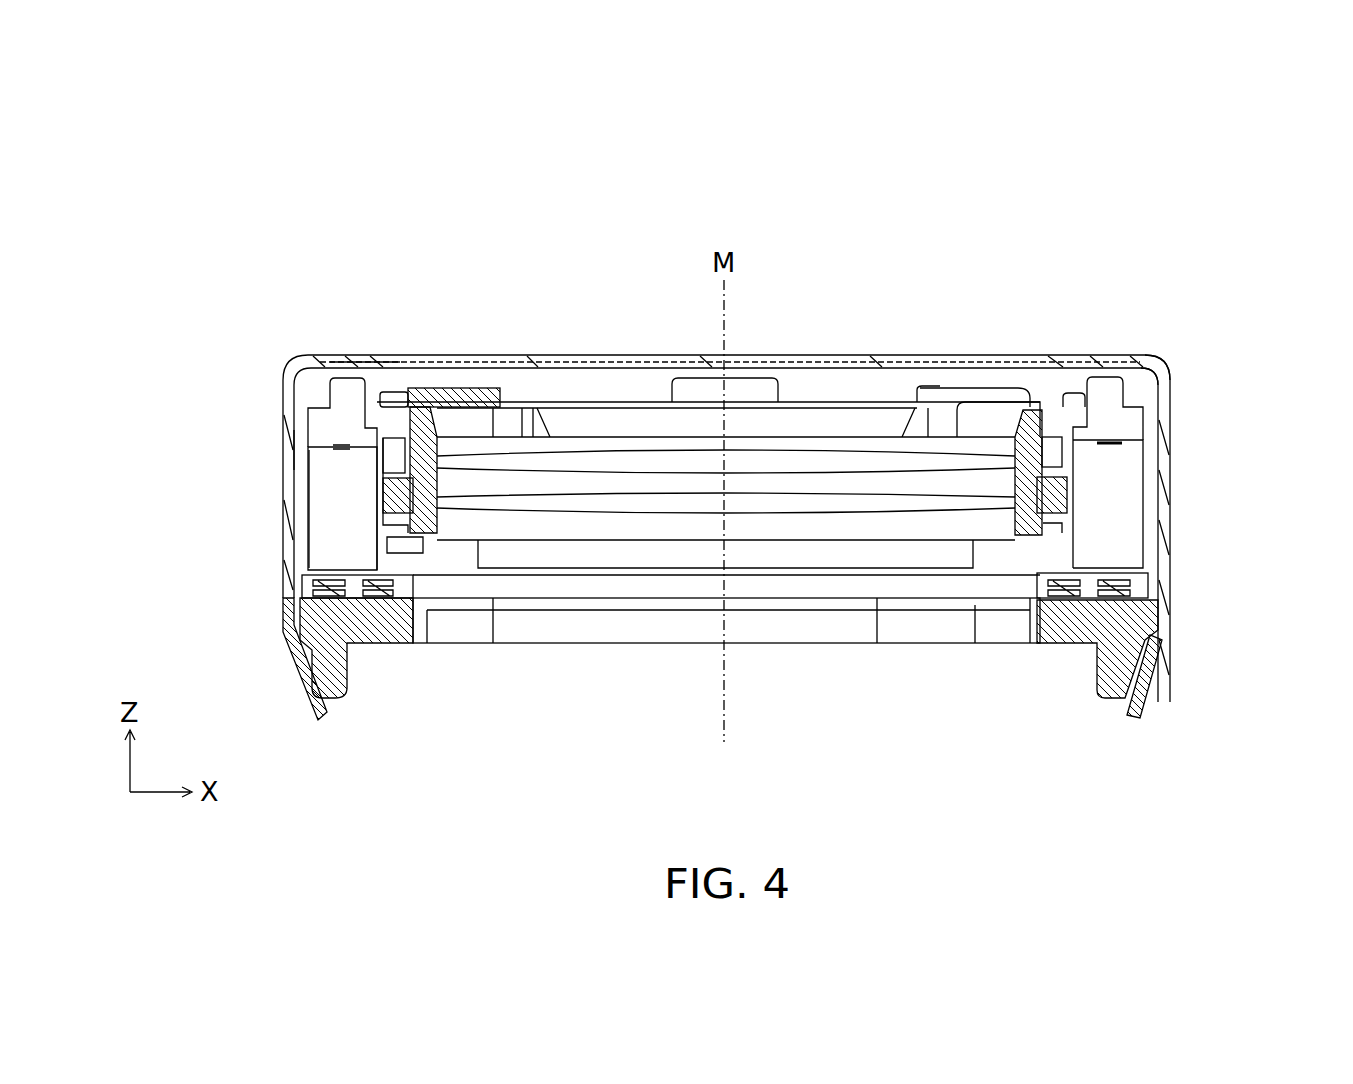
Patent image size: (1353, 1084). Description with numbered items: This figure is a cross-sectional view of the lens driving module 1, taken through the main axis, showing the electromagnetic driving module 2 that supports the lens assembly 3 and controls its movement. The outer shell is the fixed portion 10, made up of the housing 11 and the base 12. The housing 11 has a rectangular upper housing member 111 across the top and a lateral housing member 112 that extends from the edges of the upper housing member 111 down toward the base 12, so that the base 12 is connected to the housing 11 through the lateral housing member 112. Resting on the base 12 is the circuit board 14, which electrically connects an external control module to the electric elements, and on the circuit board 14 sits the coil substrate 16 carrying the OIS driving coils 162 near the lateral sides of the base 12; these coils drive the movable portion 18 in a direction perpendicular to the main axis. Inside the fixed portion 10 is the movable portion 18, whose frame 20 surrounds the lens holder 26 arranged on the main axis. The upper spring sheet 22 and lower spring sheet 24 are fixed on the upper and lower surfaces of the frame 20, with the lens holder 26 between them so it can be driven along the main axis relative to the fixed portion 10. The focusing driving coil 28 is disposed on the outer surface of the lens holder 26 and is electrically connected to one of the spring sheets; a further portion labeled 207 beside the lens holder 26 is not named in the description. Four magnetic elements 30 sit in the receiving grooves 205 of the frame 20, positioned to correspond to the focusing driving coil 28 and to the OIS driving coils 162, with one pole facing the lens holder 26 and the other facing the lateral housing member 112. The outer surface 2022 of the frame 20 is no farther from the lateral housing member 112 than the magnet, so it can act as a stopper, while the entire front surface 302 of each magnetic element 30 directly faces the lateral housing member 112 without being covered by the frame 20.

The lens driving module 1 is at (202, 192).
The electromagnetic driving module 2 is at (1113, 251).
The lens assembly 3 is at (803, 459).
The fixed portion 10 is at (278, 342).
The housing 11 is at (384, 349).
The upper housing member 111 is at (358, 356).
The lateral housing member 112 is at (292, 452).
The base 12 is at (1003, 627).
The circuit board 14 is at (298, 652).
The coil substrate 16 is at (318, 583).
The OIS driving coil 162 is at (398, 597).
The movable portion 18 is at (1152, 357).
The frame 20 is at (1133, 378).
The outer surface 2022 is at (310, 427).
The receiving groove 205 is at (1098, 434).
The side wall of holder 207 is at (383, 430).
The upper spring sheet 22 is at (578, 400).
The lower spring sheet 24 is at (578, 540).
The lens holder 26 is at (1033, 418).
The focusing driving coil 28 is at (397, 492).
The magnetic element 30 is at (327, 520).
The front surface 302 is at (313, 537).